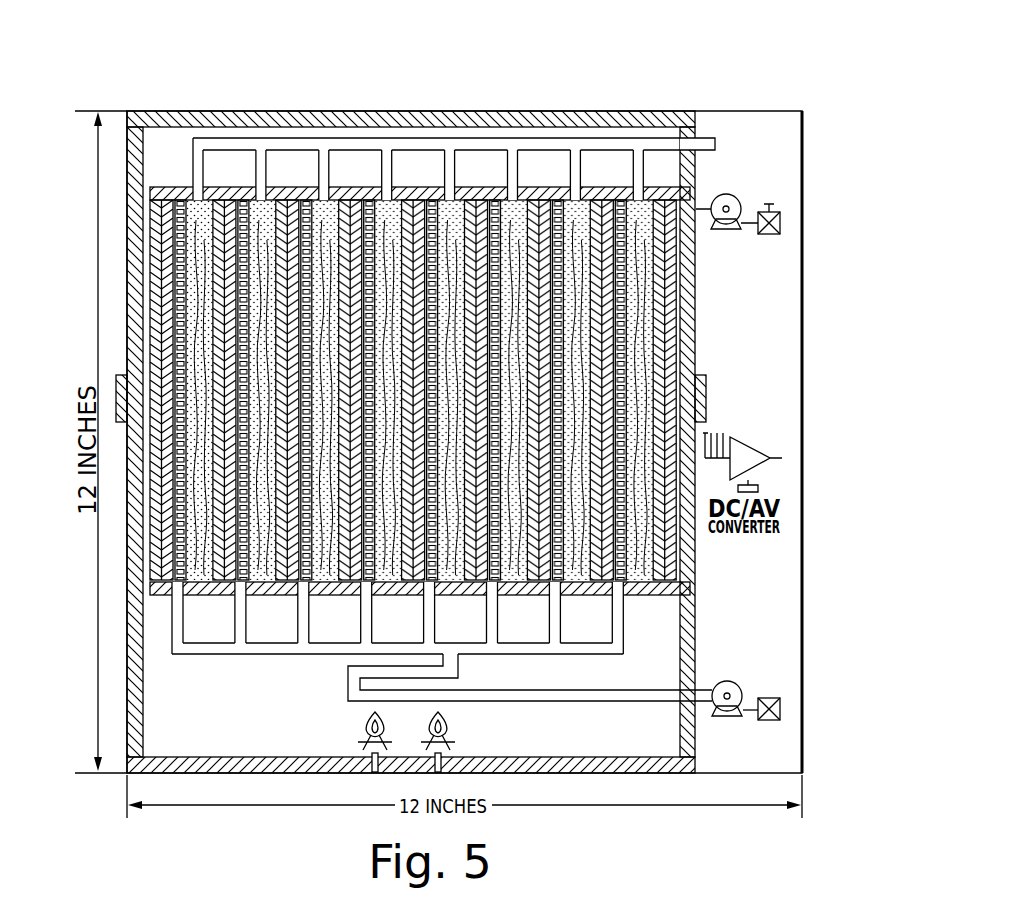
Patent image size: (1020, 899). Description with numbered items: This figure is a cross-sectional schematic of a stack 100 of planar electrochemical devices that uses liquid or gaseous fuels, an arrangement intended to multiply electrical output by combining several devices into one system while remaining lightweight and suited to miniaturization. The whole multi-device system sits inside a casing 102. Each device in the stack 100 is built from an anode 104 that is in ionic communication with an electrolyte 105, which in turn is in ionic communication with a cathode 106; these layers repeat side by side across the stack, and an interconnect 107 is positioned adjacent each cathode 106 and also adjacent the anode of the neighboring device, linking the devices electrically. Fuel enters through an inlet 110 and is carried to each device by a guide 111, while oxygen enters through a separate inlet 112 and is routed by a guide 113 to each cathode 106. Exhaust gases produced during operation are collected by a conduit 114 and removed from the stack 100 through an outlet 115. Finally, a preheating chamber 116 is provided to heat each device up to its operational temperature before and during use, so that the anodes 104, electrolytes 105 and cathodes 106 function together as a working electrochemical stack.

The stack 100 is at (116, 100).
The casing 102 is at (148, 110).
The anode 104 is at (190, 200).
The electrolyte 105 is at (221, 202).
The cathode 106 is at (300, 203).
The interconnect 107 is at (368, 202).
The inlet 110 is at (780, 223).
The guide 111 is at (493, 196).
The inlet 112 is at (780, 708).
The guide 113 is at (514, 701).
The conduit 114 is at (497, 148).
The outlet 115 is at (716, 143).
The preheating chamber 116 is at (198, 723).